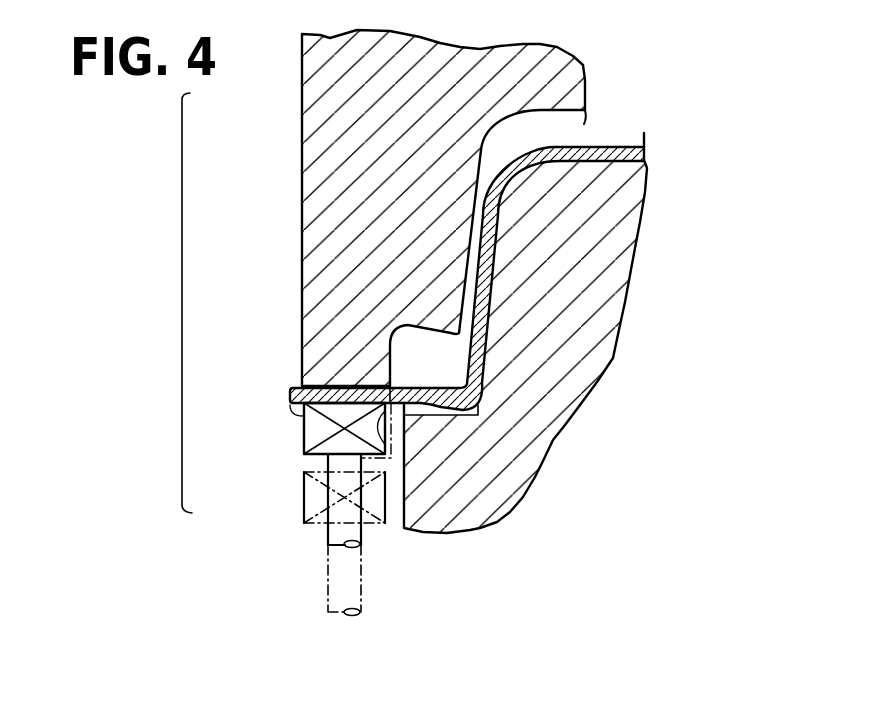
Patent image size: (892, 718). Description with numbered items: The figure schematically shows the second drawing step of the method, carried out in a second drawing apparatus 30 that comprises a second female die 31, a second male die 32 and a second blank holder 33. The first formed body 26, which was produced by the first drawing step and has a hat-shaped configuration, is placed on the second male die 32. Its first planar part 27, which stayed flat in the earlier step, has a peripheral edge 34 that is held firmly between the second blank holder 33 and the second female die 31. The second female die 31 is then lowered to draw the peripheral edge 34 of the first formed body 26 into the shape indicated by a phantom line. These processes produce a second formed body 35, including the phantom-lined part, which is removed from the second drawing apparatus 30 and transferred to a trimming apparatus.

The first formed body 26 is at (589, 251).
The first planar part 27 is at (392, 438).
The second drawing apparatus 30 is at (182, 302).
The second female die 31 is at (320, 110).
The second male die 32 is at (573, 357).
The second blank holder 33 is at (304, 432).
The peripheral edge 34 is at (290, 393).
The second formed body 35 is at (588, 147).